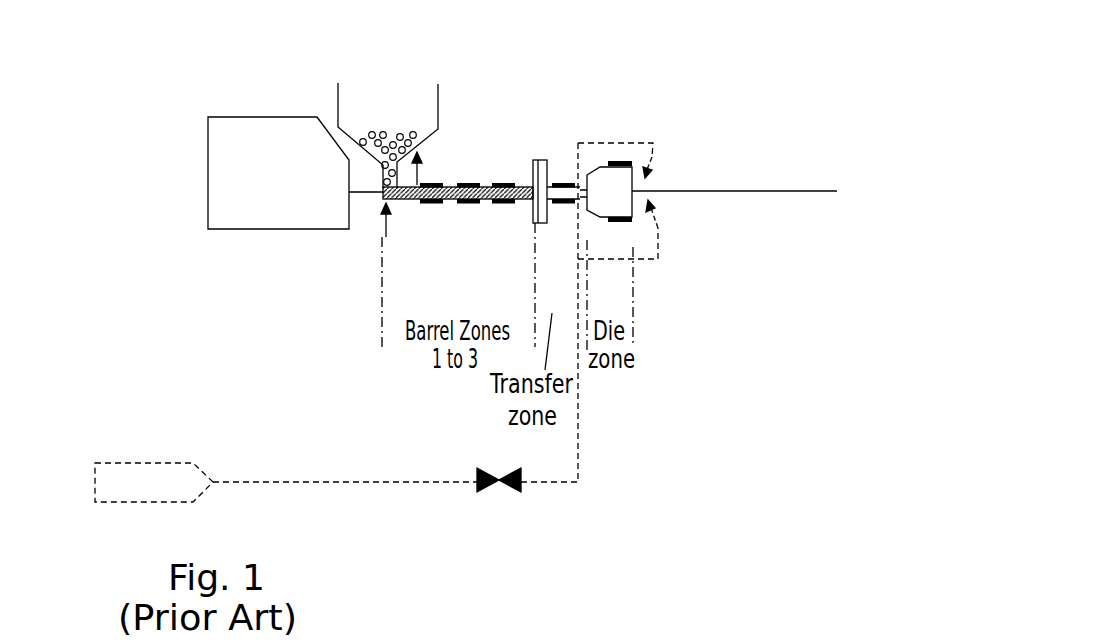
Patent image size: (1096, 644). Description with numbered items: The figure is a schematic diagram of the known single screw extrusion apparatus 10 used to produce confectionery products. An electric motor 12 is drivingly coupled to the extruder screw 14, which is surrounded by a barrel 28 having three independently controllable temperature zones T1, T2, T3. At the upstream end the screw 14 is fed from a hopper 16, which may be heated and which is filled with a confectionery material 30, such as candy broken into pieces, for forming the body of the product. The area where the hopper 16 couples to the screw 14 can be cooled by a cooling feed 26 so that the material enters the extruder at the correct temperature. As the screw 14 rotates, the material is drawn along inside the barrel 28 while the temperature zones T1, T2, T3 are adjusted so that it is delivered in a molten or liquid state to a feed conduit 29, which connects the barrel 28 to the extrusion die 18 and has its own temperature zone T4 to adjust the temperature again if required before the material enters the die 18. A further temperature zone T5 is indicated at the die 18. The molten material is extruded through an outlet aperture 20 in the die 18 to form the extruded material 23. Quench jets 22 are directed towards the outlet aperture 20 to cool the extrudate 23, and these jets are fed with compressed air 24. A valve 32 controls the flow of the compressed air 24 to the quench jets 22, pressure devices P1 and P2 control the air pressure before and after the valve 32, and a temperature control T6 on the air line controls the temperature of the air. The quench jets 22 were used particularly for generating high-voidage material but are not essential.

The extrusion system 10 is at (192, 322).
The electric motor 12 is at (272, 135).
The screw 14 is at (450, 184).
The hopper 16 is at (438, 98).
The extrusion die 18 is at (620, 177).
The outlet aperture 20 is at (652, 157).
The quench jets 22 is at (658, 228).
The extruded material 23 is at (777, 192).
The compressed air 24 is at (178, 463).
The cooling feed 26 is at (385, 232).
The barrel 28 is at (487, 204).
The feed conduit 29 is at (563, 190).
The confectionery material 30 is at (372, 130).
The valve 32 is at (508, 473).
The temperature zone T1 is at (437, 204).
The temperature zone T2 is at (472, 204).
The temperature zone T3 is at (508, 204).
The temperature zone T4 is at (570, 203).
The temperature sensor die zone T5 is at (620, 222).
The temperature control T6 is at (567, 483).
The pressure device P1 is at (450, 483).
The pressure device P2 is at (538, 483).